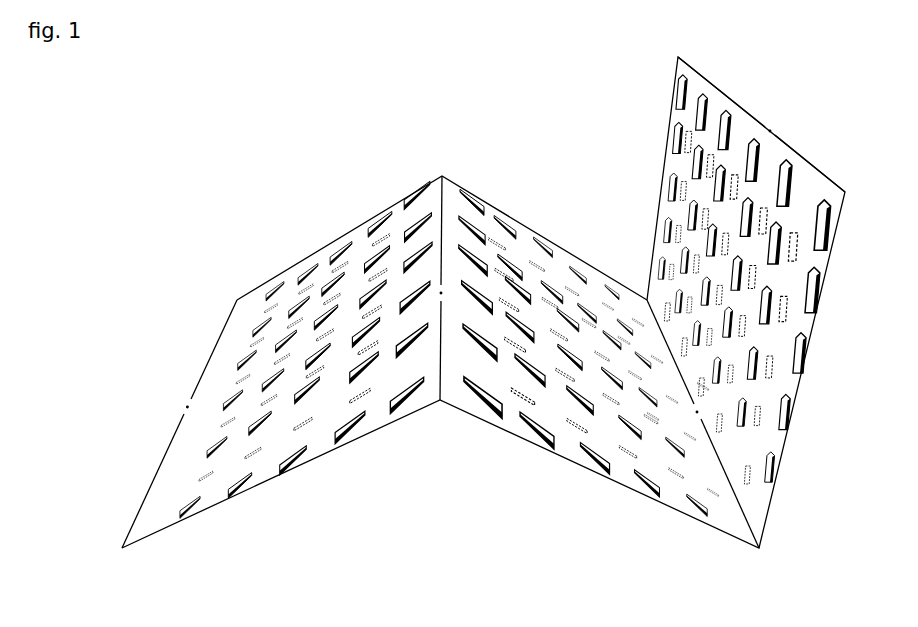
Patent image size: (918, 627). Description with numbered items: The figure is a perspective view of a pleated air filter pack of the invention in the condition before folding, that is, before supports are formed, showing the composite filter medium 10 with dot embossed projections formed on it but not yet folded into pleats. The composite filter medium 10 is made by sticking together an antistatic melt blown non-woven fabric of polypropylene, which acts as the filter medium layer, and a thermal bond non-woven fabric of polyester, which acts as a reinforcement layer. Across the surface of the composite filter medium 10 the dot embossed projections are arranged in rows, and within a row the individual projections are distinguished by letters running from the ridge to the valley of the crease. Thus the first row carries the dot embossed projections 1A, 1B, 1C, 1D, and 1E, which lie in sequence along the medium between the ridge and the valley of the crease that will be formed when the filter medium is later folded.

The composite filter medium 10 is at (455, 397).
The dot embossed projection 1A is at (477, 393).
The dot embossed projection 1B is at (535, 427).
The dot embossed projection 1C is at (590, 460).
The dot embossed projection 1D is at (640, 480).
The dot embossed projection 1E is at (697, 505).